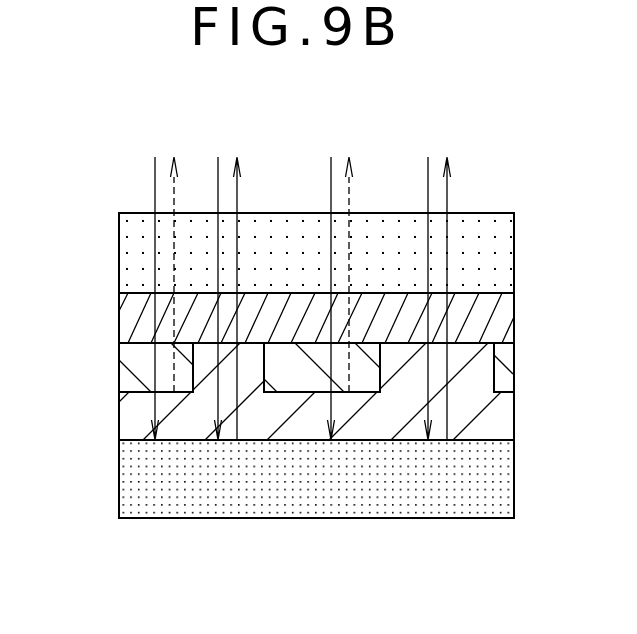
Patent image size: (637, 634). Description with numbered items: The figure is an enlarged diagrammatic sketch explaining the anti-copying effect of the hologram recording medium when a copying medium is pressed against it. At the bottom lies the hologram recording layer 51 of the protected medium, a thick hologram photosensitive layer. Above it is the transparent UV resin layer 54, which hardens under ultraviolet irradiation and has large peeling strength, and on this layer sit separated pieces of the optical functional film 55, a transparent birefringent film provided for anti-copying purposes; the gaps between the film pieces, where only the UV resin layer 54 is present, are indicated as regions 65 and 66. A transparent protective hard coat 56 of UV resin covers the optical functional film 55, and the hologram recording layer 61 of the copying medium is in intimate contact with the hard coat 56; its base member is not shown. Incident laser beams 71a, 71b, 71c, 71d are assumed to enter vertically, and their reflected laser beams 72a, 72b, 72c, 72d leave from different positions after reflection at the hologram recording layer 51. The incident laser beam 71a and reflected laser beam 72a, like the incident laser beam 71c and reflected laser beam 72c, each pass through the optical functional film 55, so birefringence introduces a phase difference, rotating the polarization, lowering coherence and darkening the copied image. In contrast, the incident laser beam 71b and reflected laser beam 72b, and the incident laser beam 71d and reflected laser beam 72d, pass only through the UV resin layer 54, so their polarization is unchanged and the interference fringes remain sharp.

The hologram recording layer 51 is at (119, 481).
The UV resin layer 54 is at (119, 421).
The optical functional film 55 is at (119, 370).
The hard coat 56 is at (119, 318).
The hologram recording layer 61 is at (119, 251).
The opening 65 is at (206, 387).
The opening 66 is at (399, 387).
The incident laser beam 71a is at (155, 192).
The incident laser beam 71b is at (218, 167).
The incident laser beam 71c is at (331, 193).
The incident laser beam 71d is at (428, 193).
The reflected laser beam 72a is at (174, 192).
The reflected laser beam 72b is at (238, 192).
The reflected laser beam 72c is at (350, 192).
The reflected laser beam 72d is at (447, 193).